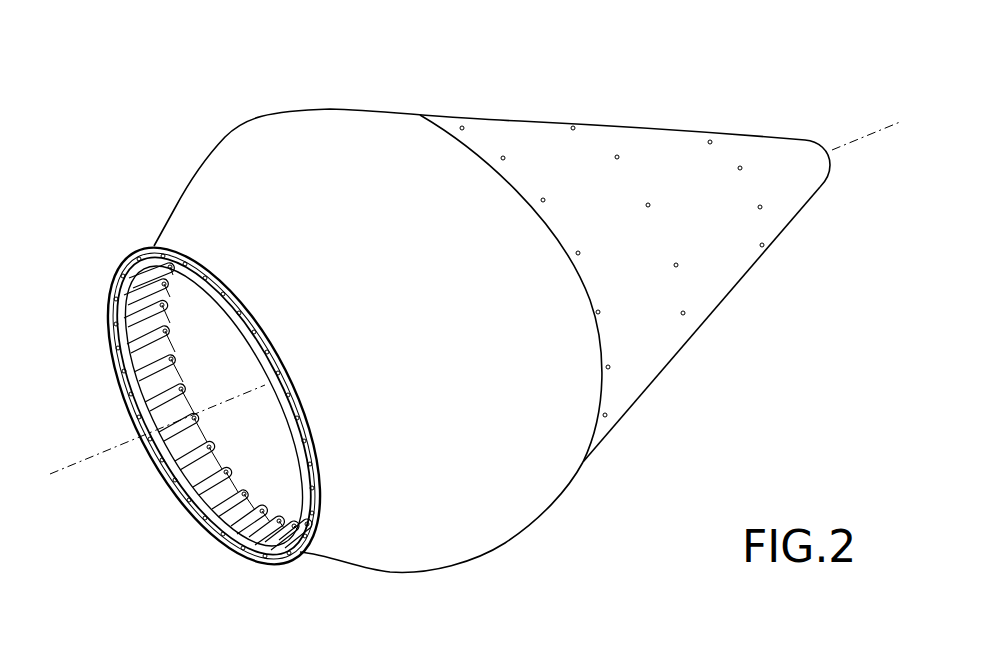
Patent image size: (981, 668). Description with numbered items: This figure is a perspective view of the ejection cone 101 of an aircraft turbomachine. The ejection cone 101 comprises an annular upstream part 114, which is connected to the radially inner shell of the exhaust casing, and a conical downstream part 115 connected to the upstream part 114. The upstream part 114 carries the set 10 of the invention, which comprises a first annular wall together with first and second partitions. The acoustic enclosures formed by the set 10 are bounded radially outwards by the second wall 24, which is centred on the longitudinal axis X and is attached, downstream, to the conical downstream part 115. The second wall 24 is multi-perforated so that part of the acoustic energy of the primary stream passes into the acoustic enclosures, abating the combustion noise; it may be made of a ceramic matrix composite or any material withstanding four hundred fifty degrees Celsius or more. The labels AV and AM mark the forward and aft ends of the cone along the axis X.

The set 10 is at (447, 302).
The second wall 24 is at (297, 124).
The annular upstream part 114 is at (226, 114).
The ejection cone 101 is at (620, 241).
The conical downstream part 115 is at (778, 301).
The longitudinal axis X is at (866, 140).
The forward direction AV is at (844, 114).
The aft direction AM is at (59, 440).